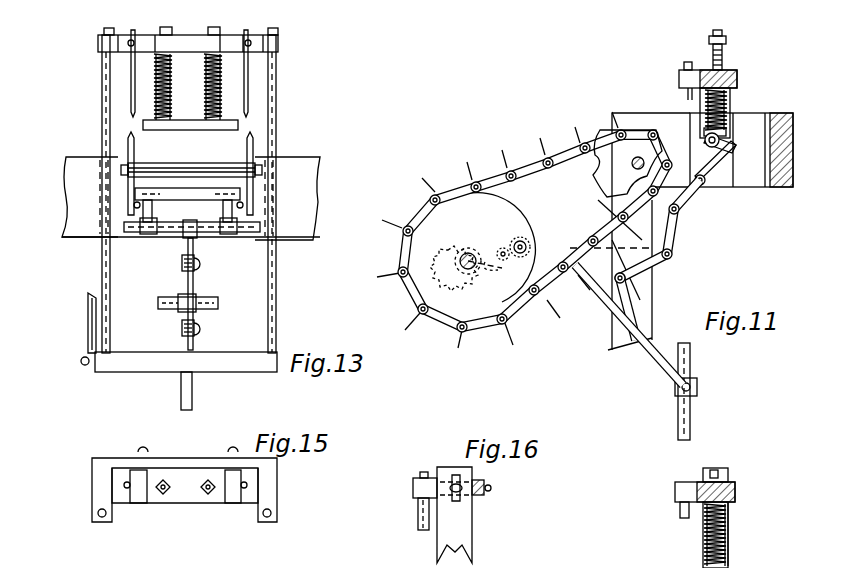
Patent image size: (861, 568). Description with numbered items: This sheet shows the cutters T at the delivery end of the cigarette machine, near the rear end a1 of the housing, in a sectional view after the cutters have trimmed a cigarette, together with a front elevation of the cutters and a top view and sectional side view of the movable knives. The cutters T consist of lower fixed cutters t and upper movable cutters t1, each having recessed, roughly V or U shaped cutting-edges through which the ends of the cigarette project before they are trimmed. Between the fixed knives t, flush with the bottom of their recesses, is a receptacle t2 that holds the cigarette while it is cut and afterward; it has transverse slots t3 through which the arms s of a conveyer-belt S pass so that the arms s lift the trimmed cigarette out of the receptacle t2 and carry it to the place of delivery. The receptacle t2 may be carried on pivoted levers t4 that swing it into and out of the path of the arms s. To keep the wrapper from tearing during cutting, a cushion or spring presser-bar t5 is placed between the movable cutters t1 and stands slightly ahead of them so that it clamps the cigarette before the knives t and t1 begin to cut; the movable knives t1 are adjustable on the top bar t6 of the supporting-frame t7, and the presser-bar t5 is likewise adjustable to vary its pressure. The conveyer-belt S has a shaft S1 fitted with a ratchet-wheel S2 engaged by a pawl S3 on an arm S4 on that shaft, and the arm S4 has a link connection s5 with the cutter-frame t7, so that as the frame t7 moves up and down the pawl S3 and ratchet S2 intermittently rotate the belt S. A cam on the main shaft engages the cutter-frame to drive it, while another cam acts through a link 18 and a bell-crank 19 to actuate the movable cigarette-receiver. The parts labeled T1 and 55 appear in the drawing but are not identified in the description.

In FIG. 13, the top bar t6 is at (188, 30).
In FIG. 11, the top bar t6 is at (737, 73).
In FIG. 15, the top bar t6 is at (182, 475).
In FIG. 13, the upper movable cutters t1 is at (131, 78).
In FIG. 15, the upper movable cutters t1 is at (130, 500).
In FIG. 13, the lower fixed cutters t is at (128, 145).
In FIG. 13, the frame wall T' T1 is at (191, 181).
In FIG. 13, the presser-bar t5 is at (192, 127).
In FIG. 11, the presser-bar t5 is at (706, 128).
In FIG. 16, the presser-bar t5 is at (730, 566).
In FIG. 13, the slots t3 is at (240, 172).
In FIG. 13, the supporting-frame t7 is at (110, 270).
In FIG. 11, the supporting-frame t7 is at (709, 40).
In FIG. 13, the pivoted levers t4 is at (224, 236).
In FIG. 11, the pivoted levers t4 is at (700, 190).
In FIG. 13, the bell-crank 19 is at (192, 287).
In FIG. 11, the bell-crank 19 is at (675, 245).
In FIG. 13, the link 18 is at (196, 340).
In FIG. 11, the link 18 is at (630, 305).
In FIG. 13, the bracket 55 is at (88, 320).
In FIG. 11, the conveyer-belt S is at (513, 235).
In FIG. 11, the arms s is at (524, 224).
In FIG. 11, the shaft S1 is at (478, 264).
In FIG. 11, the ratchet-wheel S2 is at (455, 259).
In FIG. 11, the pawl S3 is at (488, 245).
In FIG. 11, the arm S4 is at (528, 238).
In FIG. 11, the receptacle t2 is at (735, 170).
In FIG. 16, the receptacle t2 is at (688, 535).
In FIG. 11, the cutters T is at (734, 108).
In FIG. 11, the rear end a1 is at (630, 244).
In FIG. 11, the link connection s5 is at (640, 360).